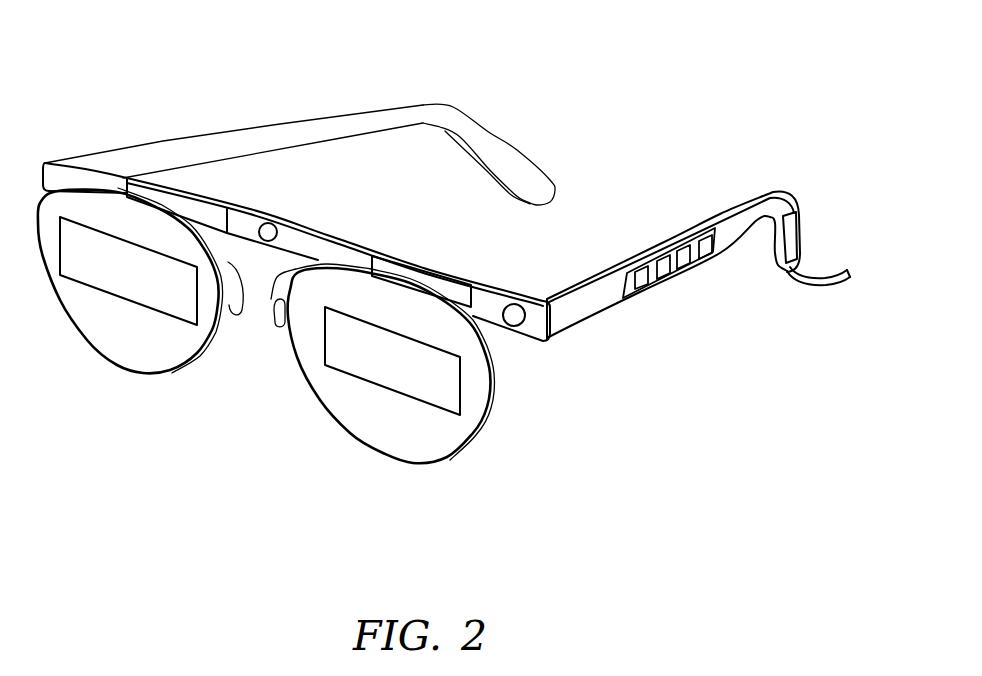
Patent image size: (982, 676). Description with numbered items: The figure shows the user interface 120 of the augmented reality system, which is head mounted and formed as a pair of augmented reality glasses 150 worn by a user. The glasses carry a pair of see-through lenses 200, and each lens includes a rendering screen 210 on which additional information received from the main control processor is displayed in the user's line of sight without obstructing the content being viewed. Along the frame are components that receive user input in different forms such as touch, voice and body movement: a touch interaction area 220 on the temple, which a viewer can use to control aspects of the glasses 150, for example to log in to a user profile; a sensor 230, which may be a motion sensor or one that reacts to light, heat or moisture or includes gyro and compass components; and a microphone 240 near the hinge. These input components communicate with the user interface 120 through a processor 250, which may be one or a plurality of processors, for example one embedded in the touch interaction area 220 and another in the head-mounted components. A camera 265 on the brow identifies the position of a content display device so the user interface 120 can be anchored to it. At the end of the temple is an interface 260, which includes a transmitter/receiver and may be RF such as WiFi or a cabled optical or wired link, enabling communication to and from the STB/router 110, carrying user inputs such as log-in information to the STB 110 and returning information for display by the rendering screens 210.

The user interface 120 is at (364, 40).
The augmented reality glasses 150 is at (163, 157).
The sensor 230 is at (188, 202).
The camera 265 is at (282, 220).
The processor 250 is at (420, 277).
The microphone 240 is at (517, 327).
The touch interaction area 220 is at (655, 278).
The interface 260 is at (794, 236).
The STB/router 110 is at (847, 343).
The lens 200 is at (112, 352).
The rendering screen 210 is at (180, 313).